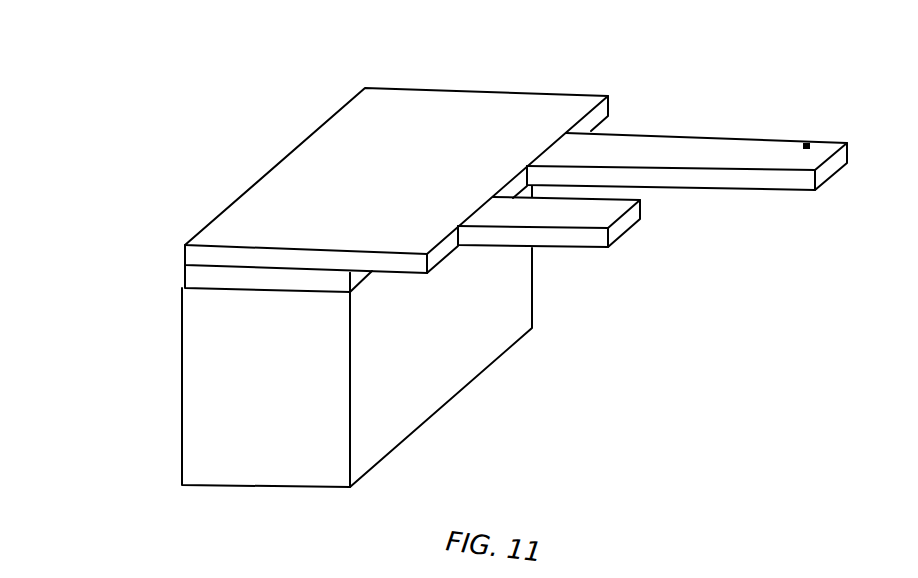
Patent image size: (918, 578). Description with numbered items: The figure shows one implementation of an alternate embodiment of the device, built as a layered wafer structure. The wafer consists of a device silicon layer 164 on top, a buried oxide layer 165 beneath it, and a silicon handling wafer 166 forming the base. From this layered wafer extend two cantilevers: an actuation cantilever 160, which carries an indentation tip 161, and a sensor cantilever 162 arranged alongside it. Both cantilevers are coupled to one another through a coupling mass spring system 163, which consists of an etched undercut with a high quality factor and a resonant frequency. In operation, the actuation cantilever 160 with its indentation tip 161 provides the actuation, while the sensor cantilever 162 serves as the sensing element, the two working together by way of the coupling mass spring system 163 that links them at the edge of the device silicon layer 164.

The actuation cantilever 160 is at (688, 138).
The indentation tip 161 is at (807, 130).
The sensor cantilever 162 is at (641, 212).
The coupling mass spring system 163 is at (427, 262).
The device silicon layer 164 is at (183, 255).
The buried oxide layer 165 is at (183, 277).
The silicon handling wafer 166 is at (183, 385).